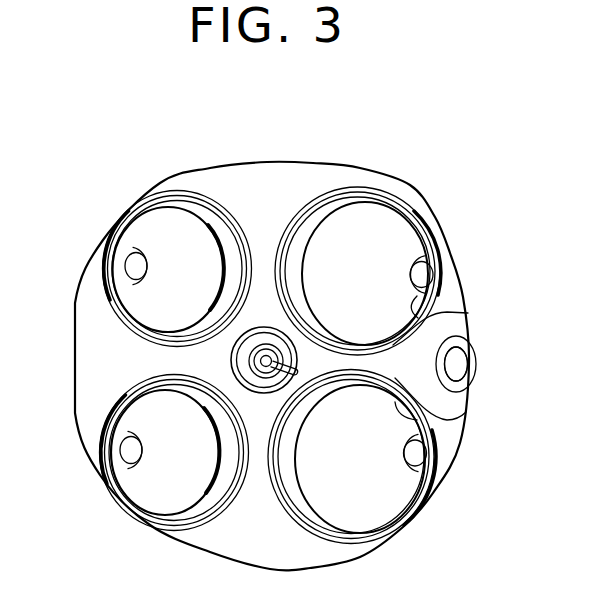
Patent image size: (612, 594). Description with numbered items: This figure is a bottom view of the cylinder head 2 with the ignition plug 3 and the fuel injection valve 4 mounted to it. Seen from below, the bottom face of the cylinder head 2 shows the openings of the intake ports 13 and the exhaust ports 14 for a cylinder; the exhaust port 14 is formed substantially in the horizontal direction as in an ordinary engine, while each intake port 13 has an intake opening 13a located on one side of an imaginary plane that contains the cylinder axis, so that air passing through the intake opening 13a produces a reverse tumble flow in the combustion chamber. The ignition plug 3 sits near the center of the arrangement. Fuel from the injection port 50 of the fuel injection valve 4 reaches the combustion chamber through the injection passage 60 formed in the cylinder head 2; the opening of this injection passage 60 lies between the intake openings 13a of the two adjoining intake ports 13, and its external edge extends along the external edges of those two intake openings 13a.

The cylinder head 2 is at (19, 365).
The ignition plug 3 is at (264, 328).
The fuel injection valve 4 is at (462, 372).
The intake port 13 is at (402, 225).
The intake opening 13a is at (417, 287).
The exhaust port 14 is at (150, 230).
The injection port 50 is at (455, 365).
The injection passage 60 is at (428, 348).